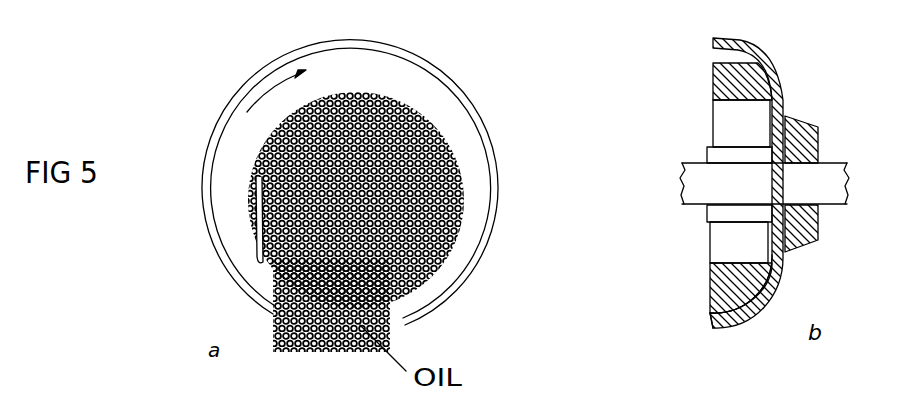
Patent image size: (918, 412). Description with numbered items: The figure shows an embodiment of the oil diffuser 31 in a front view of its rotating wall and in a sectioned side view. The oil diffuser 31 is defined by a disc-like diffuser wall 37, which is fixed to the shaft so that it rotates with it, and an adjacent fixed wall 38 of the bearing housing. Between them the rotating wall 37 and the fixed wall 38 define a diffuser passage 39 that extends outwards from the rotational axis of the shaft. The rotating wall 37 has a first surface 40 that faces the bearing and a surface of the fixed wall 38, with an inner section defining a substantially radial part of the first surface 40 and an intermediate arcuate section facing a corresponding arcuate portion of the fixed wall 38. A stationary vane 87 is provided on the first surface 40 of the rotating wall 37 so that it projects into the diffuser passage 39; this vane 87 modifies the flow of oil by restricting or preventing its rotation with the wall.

In FIG. 5b, the oil diffuser 31 is at (793, 53).
In FIG. 5a, the diffuser wall 37 is at (452, 78).
In FIG. 5b, the diffuser wall 37 is at (785, 102).
In FIG. 5b, the fixed wall 38 is at (718, 285).
In FIG. 5b, the diffuser passage 39 is at (709, 312).
In FIG. 5a, the first surface 40 is at (462, 133).
In FIG. 5b, the first surface 40 is at (797, 121).
In FIG. 5a, the stationary vane 87 is at (254, 259).
In FIG. 5b, the stationary vane 87 is at (738, 313).